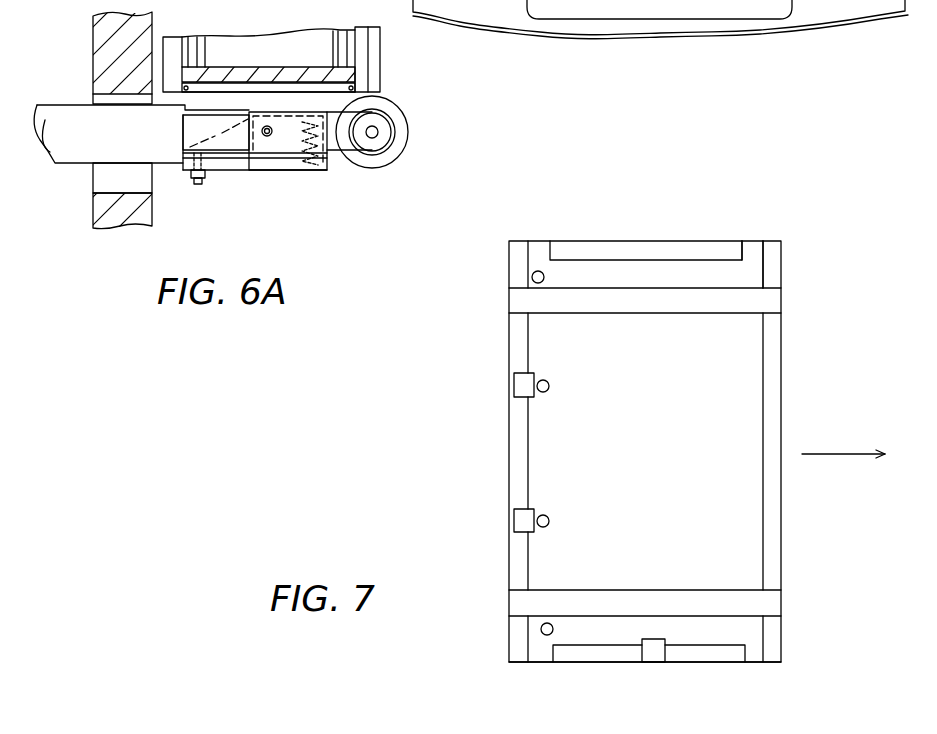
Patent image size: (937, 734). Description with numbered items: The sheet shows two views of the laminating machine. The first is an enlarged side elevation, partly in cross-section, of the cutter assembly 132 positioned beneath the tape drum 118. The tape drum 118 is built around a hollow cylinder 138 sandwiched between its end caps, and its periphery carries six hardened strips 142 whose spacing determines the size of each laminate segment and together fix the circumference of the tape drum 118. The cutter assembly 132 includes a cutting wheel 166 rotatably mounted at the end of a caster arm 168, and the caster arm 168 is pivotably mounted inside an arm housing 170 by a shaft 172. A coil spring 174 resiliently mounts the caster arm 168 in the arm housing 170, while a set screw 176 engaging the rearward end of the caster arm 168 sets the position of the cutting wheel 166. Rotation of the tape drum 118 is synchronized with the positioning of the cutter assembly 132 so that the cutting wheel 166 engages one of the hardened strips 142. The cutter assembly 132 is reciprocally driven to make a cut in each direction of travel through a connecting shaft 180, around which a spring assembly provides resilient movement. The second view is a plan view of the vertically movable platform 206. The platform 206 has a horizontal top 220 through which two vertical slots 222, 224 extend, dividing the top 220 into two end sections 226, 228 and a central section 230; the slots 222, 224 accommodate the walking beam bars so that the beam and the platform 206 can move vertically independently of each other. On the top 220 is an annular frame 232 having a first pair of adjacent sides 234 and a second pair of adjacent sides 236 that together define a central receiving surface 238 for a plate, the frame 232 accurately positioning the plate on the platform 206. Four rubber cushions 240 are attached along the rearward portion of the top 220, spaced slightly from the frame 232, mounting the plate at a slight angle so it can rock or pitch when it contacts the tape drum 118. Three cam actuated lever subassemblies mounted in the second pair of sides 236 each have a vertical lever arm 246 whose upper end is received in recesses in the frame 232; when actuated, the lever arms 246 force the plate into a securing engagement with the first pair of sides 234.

In FIG. 6A, the tape drum 118 is at (397, 72).
In FIG. 6A, the cutter assembly 132 is at (93, 233).
In FIG. 6A, the hollow cylinder 138 is at (253, 63).
In FIG. 6A, the hardened strips 142 is at (237, 95).
In FIG. 6A, the cutting wheel 166 is at (412, 128).
In FIG. 6A, the caster arm 168 is at (378, 164).
In FIG. 6A, the arm housing 170 is at (316, 176).
In FIG. 6A, the shaft 172 is at (269, 138).
In FIG. 6A, the coil spring 174 is at (336, 158).
In FIG. 6A, the set screw 176 is at (197, 186).
In FIG. 6A, the connecting shaft 180 is at (74, 105).
In FIG. 7, the platform 206 is at (490, 452).
In FIG. 7, the horizontal top 220 is at (682, 473).
In FIG. 7, the vertical slot 222 is at (778, 300).
In FIG. 7, the vertical slot 224 is at (772, 602).
In FIG. 7, the end section 226 is at (544, 238).
In FIG. 7, the end section 228 is at (759, 667).
In FIG. 7, the central section 230 is at (543, 310).
In FIG. 7, the annular frame 232 is at (786, 562).
In FIG. 7, the first pair of adjacent sides 234 is at (772, 246).
In FIG. 7, the second pair of adjacent sides 236 is at (560, 656).
In FIG. 7, the central receiving surface 238 is at (755, 362).
In FIG. 7, the rubber cushions 240 is at (532, 276).
In FIG. 7, the lever arm 246 is at (515, 383).